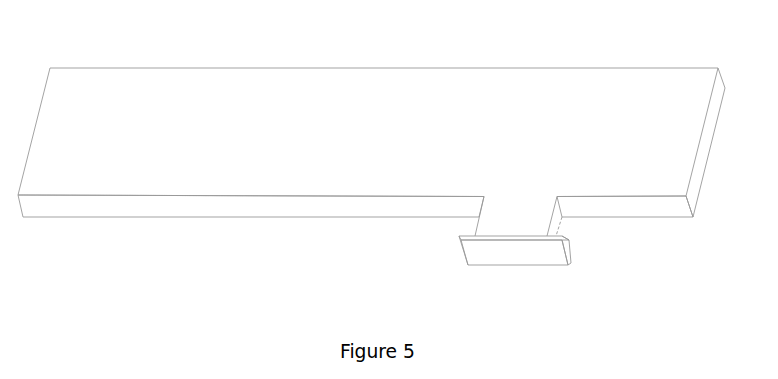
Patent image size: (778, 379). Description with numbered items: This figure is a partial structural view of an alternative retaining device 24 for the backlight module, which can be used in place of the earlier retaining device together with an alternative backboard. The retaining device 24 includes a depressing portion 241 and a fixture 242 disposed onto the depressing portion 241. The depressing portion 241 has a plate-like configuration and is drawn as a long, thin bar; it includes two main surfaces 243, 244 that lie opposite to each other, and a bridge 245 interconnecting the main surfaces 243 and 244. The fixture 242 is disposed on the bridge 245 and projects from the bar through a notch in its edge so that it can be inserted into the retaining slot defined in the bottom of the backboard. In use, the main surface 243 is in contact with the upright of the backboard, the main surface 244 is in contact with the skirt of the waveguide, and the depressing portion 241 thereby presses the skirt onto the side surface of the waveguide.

The retaining device 24 is at (371, 162).
The depressing portion 241 is at (635, 182).
The fixture 242 is at (517, 248).
The main surface 243 is at (180, 195).
The main surface 244 is at (211, 219).
The bridge 245 is at (410, 208).